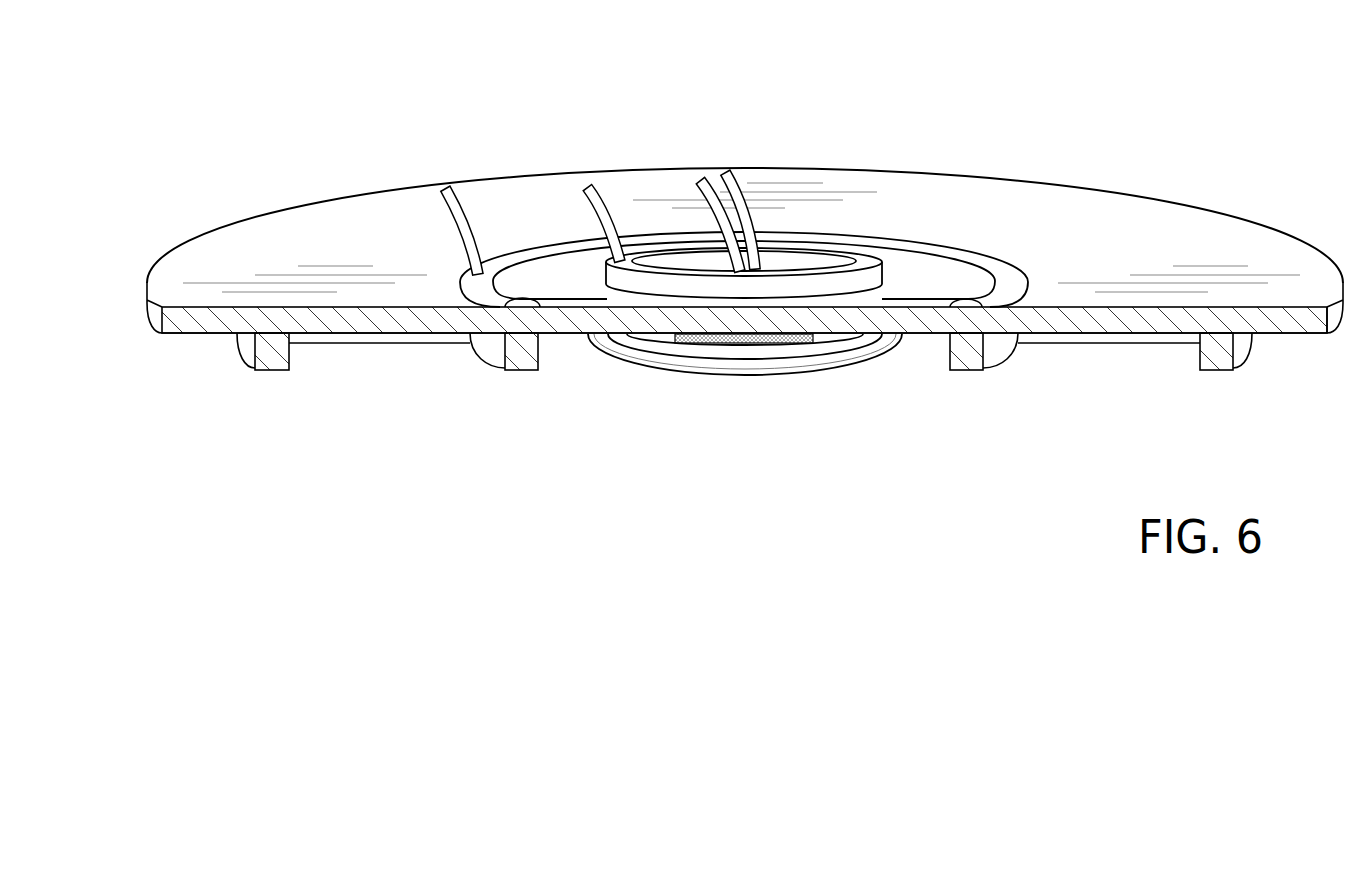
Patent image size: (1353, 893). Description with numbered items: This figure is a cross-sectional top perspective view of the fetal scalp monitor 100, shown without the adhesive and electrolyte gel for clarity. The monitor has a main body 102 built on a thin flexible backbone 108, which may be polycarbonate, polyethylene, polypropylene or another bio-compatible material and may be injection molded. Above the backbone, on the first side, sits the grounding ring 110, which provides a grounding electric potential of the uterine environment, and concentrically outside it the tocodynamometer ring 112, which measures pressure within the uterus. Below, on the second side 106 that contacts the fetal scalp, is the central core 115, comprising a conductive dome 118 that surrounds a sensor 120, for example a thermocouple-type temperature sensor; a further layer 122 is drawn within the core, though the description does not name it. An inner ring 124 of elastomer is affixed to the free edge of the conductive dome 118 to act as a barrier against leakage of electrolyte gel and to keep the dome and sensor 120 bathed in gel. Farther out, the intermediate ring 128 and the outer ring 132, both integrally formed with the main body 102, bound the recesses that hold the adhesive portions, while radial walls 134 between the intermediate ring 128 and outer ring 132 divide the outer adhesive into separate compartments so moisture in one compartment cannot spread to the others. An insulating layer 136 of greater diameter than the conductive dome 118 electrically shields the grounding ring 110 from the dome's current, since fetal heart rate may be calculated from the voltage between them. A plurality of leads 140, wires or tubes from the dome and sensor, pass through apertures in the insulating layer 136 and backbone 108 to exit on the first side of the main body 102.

The fetal scalp monitor 100 is at (188, 181).
The main body 102 is at (744, 320).
The second side 106 is at (188, 412).
The flexible backbone 108 is at (1302, 335).
The grounding ring 110 is at (863, 257).
The tocodynamometer ring 112 is at (997, 272).
The central core 115 is at (768, 408).
The conductive dome 118 is at (830, 345).
The sensor 120 is at (755, 352).
The inner layer 122 is at (685, 350).
The inner ring 124 is at (620, 348).
The intermediate ring 128 is at (522, 372).
The outer ring 132 is at (272, 372).
The radial walls 134 is at (382, 346).
The insulating layer 136 is at (722, 343).
The leads 140 is at (443, 186).